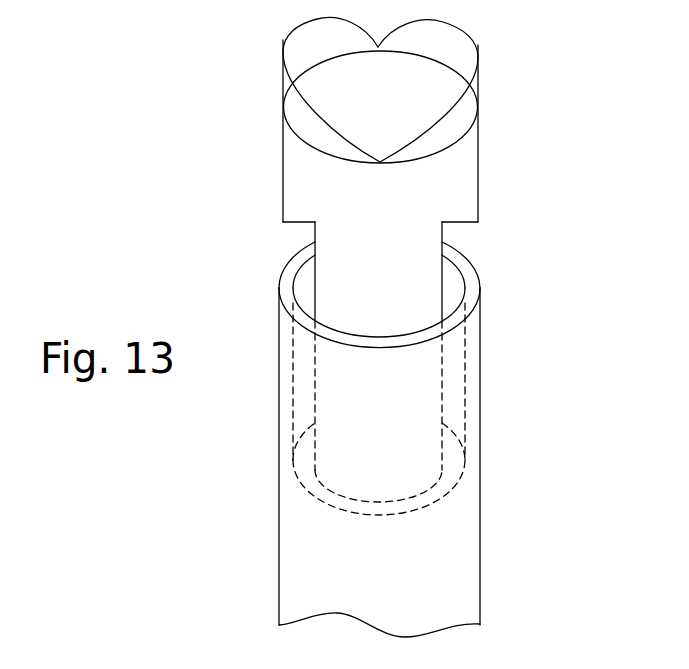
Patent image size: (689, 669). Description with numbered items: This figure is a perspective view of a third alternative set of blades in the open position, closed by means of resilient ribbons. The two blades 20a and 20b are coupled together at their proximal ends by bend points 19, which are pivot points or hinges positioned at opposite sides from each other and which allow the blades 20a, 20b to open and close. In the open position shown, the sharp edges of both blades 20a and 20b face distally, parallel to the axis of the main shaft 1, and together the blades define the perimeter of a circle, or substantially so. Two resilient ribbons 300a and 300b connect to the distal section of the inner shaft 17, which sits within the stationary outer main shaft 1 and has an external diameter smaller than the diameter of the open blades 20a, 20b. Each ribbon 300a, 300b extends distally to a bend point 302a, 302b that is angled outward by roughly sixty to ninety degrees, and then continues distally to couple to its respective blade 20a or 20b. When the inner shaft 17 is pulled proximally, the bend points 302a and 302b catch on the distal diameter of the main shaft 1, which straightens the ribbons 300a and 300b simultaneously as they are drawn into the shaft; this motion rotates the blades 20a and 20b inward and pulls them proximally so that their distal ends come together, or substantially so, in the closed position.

The main shaft 1 is at (480, 568).
The inner shaft 17 is at (300, 540).
The bend points 19 is at (380, 162).
The blade 20a is at (478, 78).
The blade 20b is at (283, 68).
The resilient ribbon 300a is at (428, 297).
The resilient ribbon 300b is at (283, 162).
The bend point 302a is at (465, 222).
The bend point 302b is at (290, 222).